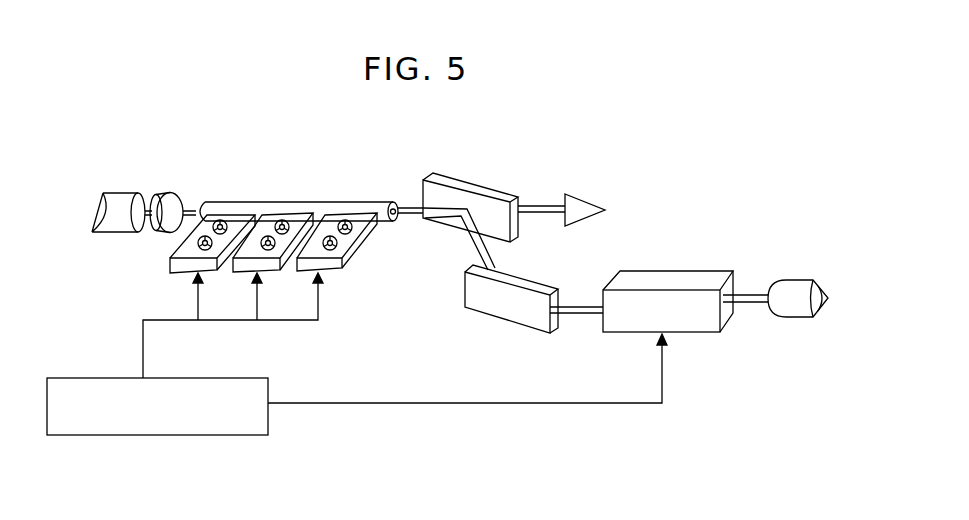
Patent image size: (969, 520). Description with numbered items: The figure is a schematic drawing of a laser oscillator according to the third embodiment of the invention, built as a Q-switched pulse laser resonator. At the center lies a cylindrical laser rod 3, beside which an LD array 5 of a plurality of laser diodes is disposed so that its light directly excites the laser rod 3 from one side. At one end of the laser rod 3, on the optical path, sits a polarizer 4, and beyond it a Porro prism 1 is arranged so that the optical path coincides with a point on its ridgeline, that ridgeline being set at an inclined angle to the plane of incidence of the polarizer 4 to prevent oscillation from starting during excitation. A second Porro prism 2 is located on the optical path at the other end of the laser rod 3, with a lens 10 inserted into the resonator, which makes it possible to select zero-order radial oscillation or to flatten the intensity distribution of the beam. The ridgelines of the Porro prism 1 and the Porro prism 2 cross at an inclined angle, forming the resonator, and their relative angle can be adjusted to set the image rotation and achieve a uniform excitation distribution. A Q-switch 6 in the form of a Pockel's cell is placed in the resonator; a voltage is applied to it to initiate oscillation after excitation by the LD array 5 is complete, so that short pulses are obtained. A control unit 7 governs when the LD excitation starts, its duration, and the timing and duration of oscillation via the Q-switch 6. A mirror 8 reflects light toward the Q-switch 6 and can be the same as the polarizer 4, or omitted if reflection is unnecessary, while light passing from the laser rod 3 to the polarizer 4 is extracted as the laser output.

The Porro prism 1 is at (797, 318).
The second Porro prism 2 is at (123, 193).
The laser rod 3 is at (298, 202).
The polarizer 4 is at (476, 188).
The LD array 5 is at (170, 249).
The Q-switch 6 is at (677, 271).
The control unit 7 is at (197, 436).
The mirror 8 is at (495, 317).
The lens 10 is at (166, 191).